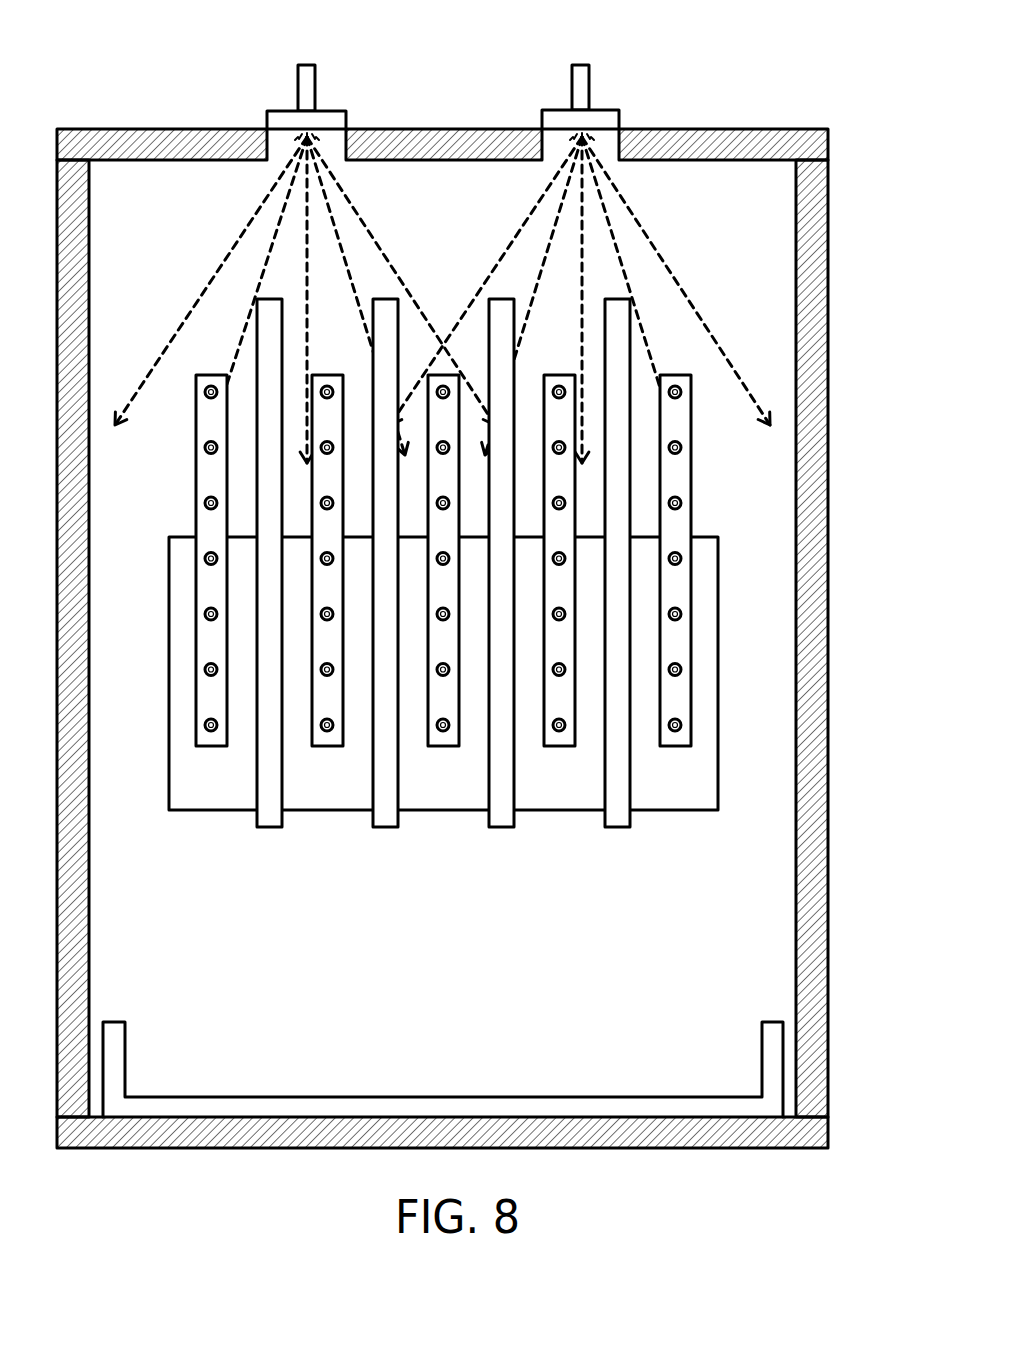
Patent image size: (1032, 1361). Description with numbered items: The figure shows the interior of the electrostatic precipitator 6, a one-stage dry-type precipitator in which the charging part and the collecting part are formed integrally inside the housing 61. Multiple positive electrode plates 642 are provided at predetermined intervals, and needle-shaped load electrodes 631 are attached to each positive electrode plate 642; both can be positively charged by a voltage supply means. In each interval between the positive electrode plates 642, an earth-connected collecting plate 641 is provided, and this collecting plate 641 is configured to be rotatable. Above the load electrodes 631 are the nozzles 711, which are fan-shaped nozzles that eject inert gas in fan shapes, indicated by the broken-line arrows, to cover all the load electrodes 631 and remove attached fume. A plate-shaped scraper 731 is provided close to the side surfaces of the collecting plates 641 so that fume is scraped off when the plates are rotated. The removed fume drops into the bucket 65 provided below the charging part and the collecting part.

The electrostatic precipitator 6 is at (475, 581).
The housing 61 is at (812, 218).
The bucket 65 is at (623, 1108).
The load electrode 631 is at (210, 502).
The collecting plate 641 is at (269, 813).
The positive electrode plate 642 is at (678, 475).
The nozzle 711 is at (282, 120).
The scraper 731 is at (458, 798).